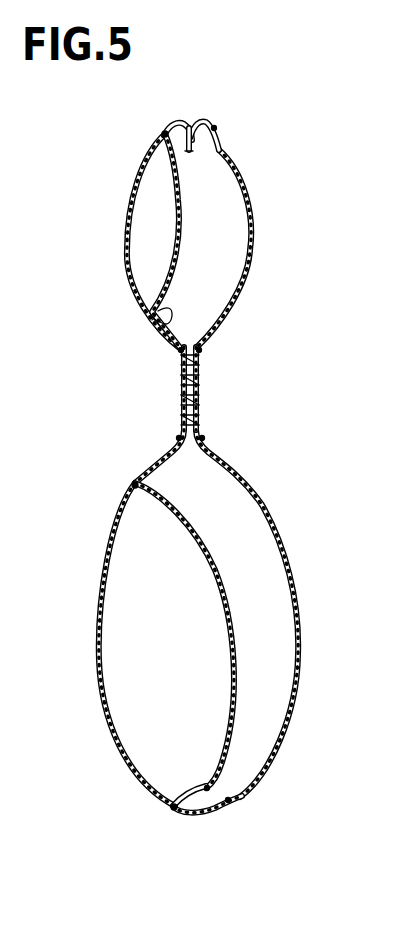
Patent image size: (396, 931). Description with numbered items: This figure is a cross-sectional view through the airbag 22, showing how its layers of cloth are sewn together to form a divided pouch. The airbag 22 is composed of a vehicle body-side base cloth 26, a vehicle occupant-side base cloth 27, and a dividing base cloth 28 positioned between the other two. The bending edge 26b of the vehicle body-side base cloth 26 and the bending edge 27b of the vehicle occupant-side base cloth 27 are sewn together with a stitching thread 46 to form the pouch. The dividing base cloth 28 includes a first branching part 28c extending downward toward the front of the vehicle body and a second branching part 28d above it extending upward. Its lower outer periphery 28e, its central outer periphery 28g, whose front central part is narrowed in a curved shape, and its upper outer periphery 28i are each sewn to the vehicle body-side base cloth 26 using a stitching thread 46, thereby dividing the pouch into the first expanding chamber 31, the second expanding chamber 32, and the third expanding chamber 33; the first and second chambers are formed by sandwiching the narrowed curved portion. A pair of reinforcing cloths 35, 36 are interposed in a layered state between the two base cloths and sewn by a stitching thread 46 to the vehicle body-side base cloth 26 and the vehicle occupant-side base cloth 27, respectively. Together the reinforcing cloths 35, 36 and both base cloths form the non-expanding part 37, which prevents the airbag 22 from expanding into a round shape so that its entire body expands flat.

The airbag 22 is at (201, 481).
The vehicle body-side base cloth 26 is at (128, 246).
The bending edge of vehicle body-side base cloth 26b is at (170, 153).
The vehicle occupant-side base cloth 27 is at (250, 208).
The bending edge of vehicle occupant-side base cloth 27b is at (195, 134).
The dividing base cloth 28 is at (254, 635).
The first branching part 28c is at (242, 659).
The second branching part 28d is at (181, 201).
The lower outer periphery 28e is at (138, 489).
The central outer periphery 28g is at (176, 340).
The upper outer periphery 28i is at (186, 121).
The first expanding chamber 31 is at (170, 662).
The second expanding chamber 32 is at (168, 235).
The third expanding chamber 33 is at (227, 262).
The reinforcing cloth 35 is at (178, 377).
The reinforcing cloth 36 is at (200, 390).
The non-expanding part 37 is at (180, 401).
The stitching thread 46 is at (163, 132).